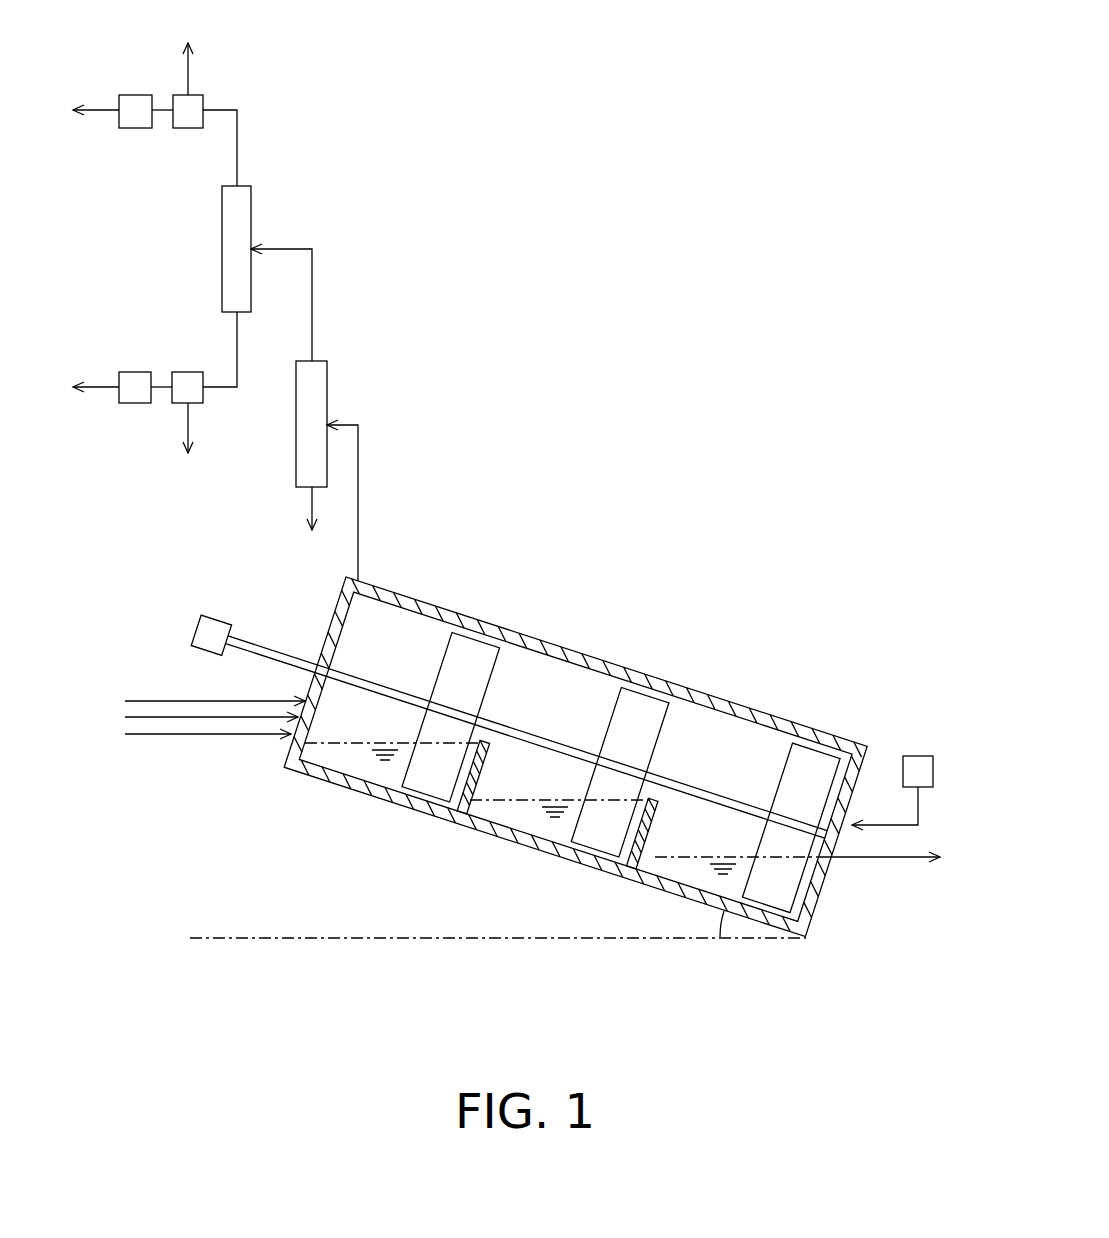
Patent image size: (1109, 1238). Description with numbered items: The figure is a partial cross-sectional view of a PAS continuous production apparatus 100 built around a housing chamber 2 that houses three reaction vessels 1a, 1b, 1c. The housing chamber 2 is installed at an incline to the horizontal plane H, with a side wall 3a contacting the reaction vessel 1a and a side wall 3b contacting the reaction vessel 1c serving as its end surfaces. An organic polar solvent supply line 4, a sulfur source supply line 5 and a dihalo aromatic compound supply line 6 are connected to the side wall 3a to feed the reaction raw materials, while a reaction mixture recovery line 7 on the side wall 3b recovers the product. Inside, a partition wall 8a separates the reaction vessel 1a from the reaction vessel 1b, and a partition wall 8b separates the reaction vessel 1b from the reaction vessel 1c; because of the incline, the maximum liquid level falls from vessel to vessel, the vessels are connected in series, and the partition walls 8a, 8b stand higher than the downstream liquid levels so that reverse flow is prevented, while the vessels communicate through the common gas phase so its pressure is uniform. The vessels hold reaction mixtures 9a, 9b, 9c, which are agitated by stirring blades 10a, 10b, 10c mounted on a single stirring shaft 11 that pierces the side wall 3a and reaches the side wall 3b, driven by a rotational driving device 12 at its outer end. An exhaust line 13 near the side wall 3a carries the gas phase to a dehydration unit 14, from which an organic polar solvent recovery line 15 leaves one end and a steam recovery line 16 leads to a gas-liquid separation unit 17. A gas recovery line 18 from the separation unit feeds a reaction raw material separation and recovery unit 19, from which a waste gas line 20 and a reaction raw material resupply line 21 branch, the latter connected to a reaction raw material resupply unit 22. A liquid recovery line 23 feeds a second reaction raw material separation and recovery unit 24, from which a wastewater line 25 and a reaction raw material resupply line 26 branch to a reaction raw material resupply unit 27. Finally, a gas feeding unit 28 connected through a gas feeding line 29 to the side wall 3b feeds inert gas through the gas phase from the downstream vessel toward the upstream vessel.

The PAS continuous production apparatus 100 is at (714, 429).
The housing chamber 2 is at (584, 757).
The reaction vessel 1a is at (393, 646).
The reaction vessel 1b is at (561, 705).
The reaction vessel 1c is at (724, 756).
The side wall 3a is at (326, 618).
The side wall 3b is at (824, 904).
The organic polar solvent supply line 4 is at (125, 700).
The sulfur source supply line 5 is at (125, 717).
The dihalo aromatic compound supply line 6 is at (125, 734).
The reaction mixture recovery line 7 is at (902, 864).
The partition wall 8a is at (466, 814).
The partition wall 8b is at (638, 852).
The reaction mixture 9a is at (360, 779).
The reaction mixture 9b is at (533, 822).
The reaction mixture 9c is at (668, 874).
The stirring blade 10a is at (473, 648).
The stirring blade 10b is at (636, 706).
The stirring blade 10c is at (800, 756).
The stirring shaft 11 is at (262, 650).
The rotational driving device 12 is at (213, 622).
The exhaust line 13 is at (362, 468).
The dehydration unit 14 is at (331, 386).
The organic polar solvent recovery line 15 is at (308, 506).
The steam recovery line 16 is at (316, 292).
The gas-liquid separation unit 17 is at (252, 208).
The gas recovery line 18 is at (243, 148).
The reaction raw material separation and recovery unit 19 is at (190, 128).
The waste gas line 20 is at (194, 72).
The reaction raw material resupply line 21 is at (95, 108).
The reaction raw material resupply unit 22 is at (137, 95).
The liquid recovery line 23 is at (242, 340).
The reaction raw material separation and recovery unit 24 is at (189, 372).
The wastewater line 25 is at (194, 420).
The reaction raw material resupply line 26 is at (96, 385).
The reaction raw material resupply unit 27 is at (136, 372).
The gas feeding unit 28 is at (919, 756).
The gas feeding line 29 is at (922, 810).
The horizontal plane H is at (472, 942).